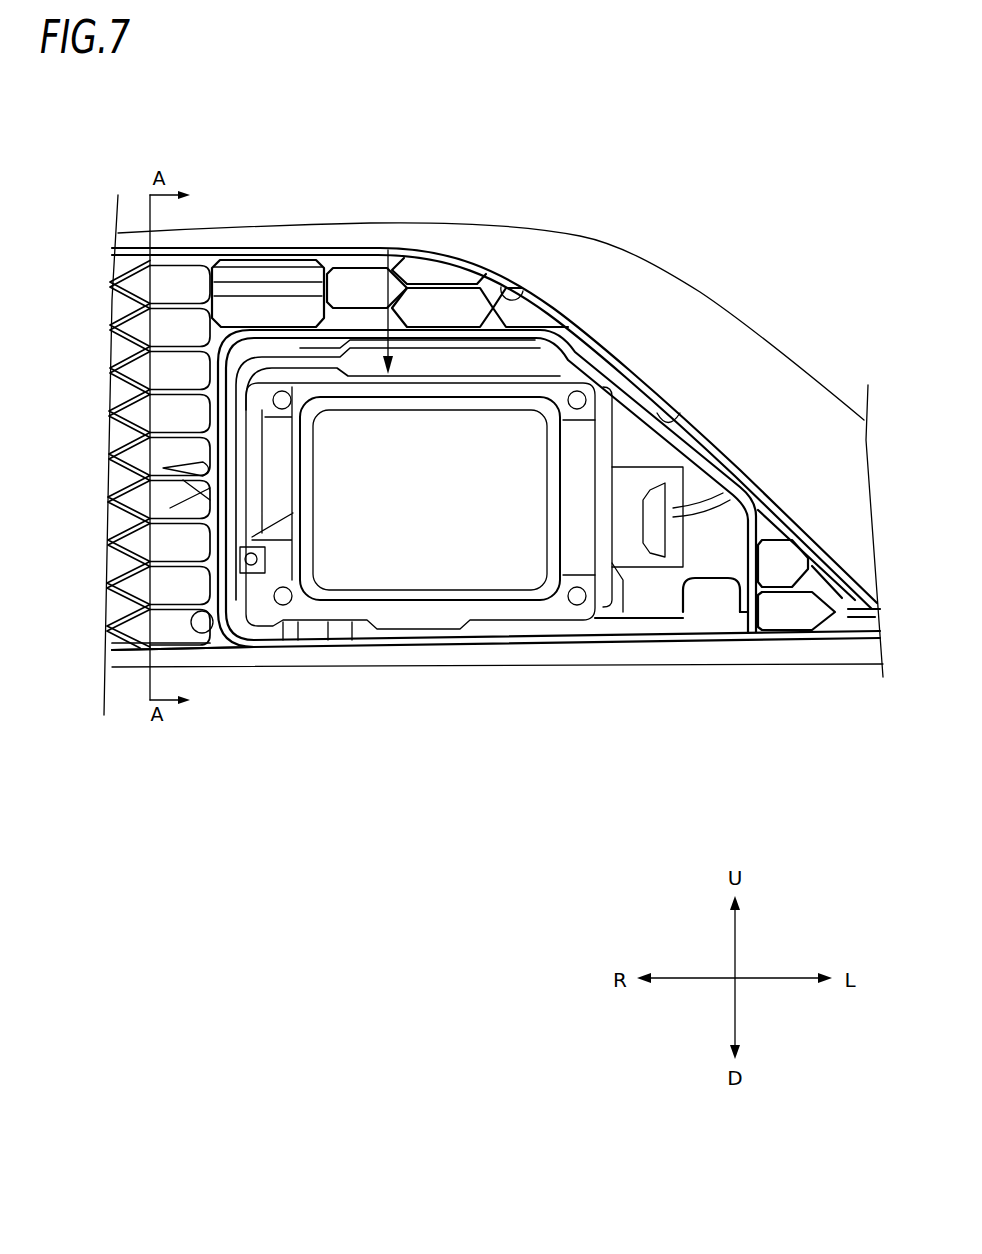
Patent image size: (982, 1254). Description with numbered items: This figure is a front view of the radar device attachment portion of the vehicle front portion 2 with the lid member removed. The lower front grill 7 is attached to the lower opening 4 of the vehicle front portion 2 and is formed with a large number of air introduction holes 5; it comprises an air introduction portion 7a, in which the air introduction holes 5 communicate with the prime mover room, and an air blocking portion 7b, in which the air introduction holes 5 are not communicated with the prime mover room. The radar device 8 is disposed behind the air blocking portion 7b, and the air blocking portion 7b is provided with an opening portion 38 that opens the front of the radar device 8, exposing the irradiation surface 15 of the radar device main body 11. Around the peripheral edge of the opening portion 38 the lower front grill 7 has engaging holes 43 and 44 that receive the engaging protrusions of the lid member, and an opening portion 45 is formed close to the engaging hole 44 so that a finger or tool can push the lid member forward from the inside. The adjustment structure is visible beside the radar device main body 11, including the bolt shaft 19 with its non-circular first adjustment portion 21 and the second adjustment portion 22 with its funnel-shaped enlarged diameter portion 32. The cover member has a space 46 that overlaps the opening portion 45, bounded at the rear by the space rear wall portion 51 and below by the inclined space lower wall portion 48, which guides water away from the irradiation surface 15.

The vehicle front portion 2 is at (730, 232).
The lower opening 4 is at (540, 277).
The air introduction holes 5 is at (160, 312).
The lower front grill 7 is at (125, 556).
The air introduction portion 7a is at (191, 556).
The air blocking portion 7b is at (492, 250).
The radar device 8 is at (460, 272).
The radar device main body 11 is at (426, 605).
The irradiation surface 15 is at (425, 548).
The bolt shaft 19 is at (183, 732).
The first adjustment portion 21 is at (237, 650).
The second adjustment portion 22 is at (122, 502).
The enlarged diameter portion 32 is at (203, 468).
The opening portion 38 is at (230, 417).
The engaging hole 43 is at (560, 307).
The engaging hole 44 is at (333, 307).
The opening portion 45 is at (300, 292).
The space 46 is at (271, 209).
The space rear wall portion 51 is at (262, 290).
The space lower wall portion 48 is at (270, 373).